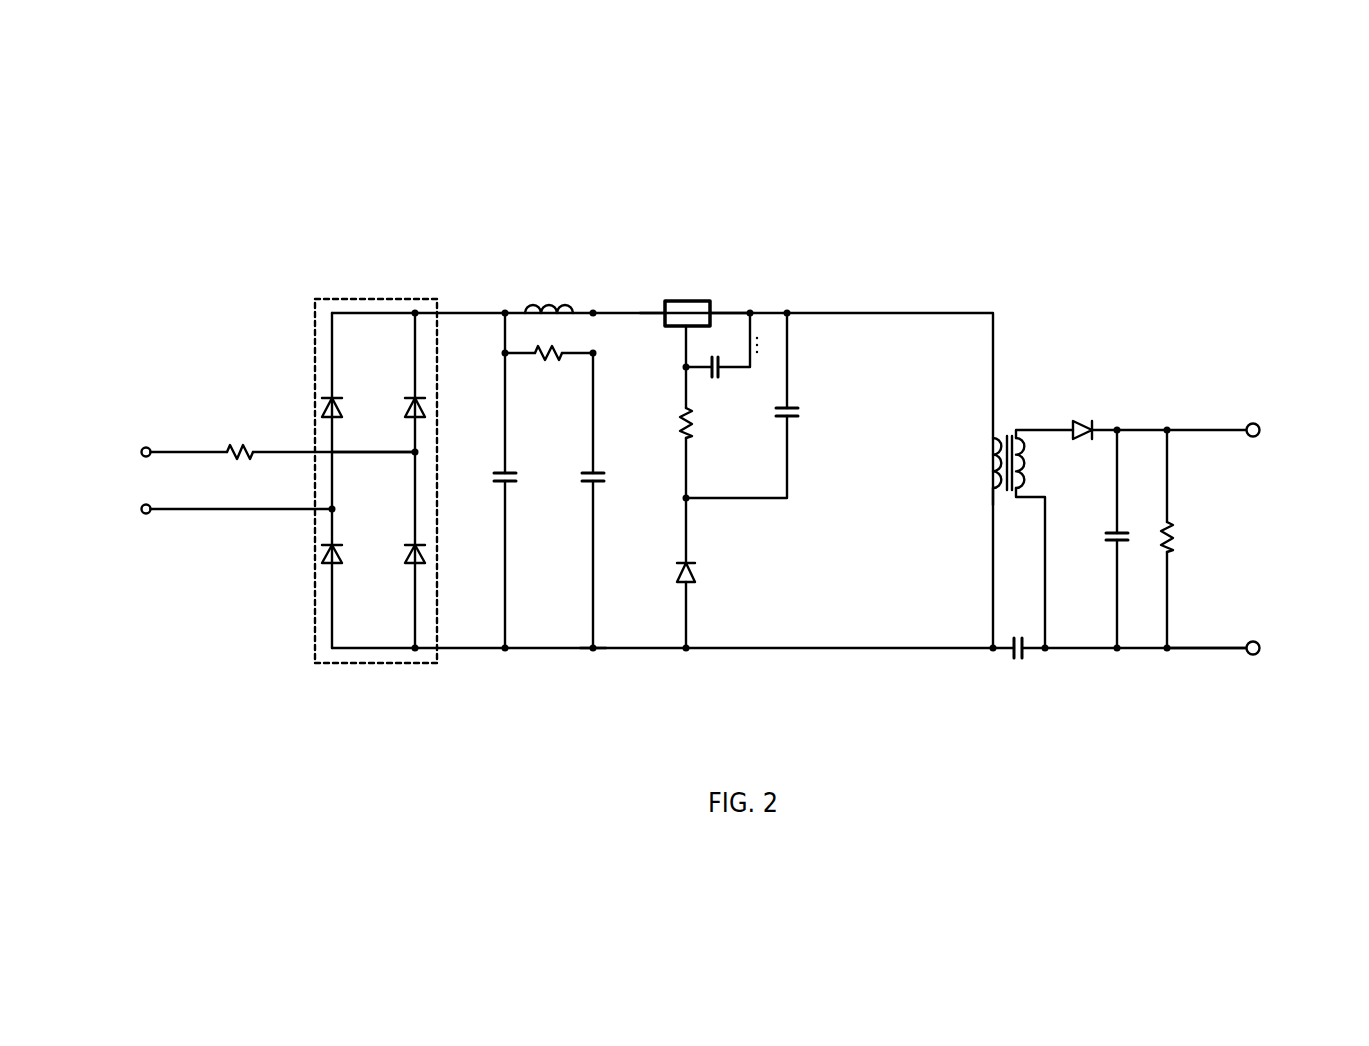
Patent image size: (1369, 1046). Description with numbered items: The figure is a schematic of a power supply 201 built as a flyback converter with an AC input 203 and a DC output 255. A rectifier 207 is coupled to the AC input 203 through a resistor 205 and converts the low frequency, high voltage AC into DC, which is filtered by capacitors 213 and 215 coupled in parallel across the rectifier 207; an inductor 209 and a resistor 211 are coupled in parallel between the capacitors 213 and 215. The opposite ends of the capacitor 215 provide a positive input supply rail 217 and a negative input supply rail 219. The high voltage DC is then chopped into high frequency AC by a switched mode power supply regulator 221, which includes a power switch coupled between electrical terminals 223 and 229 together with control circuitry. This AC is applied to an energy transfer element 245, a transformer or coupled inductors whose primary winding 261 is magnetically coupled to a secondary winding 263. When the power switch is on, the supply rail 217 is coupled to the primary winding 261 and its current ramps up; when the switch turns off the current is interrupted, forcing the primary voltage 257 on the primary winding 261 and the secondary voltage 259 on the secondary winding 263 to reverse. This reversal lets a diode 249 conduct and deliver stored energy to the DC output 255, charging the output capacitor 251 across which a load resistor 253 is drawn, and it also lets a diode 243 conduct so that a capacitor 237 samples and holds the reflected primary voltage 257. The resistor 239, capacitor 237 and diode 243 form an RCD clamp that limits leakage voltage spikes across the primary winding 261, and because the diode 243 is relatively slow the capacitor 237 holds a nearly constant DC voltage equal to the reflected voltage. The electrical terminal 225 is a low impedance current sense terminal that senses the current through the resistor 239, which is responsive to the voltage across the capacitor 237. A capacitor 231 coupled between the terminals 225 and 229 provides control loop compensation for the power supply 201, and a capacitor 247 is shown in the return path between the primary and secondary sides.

The power supply 201 is at (1160, 127).
The AC input 203 is at (110, 450).
The resistor 205 is at (235, 447).
The rectifier 207 is at (372, 297).
The inductor 209 is at (532, 307).
The resistor 211 is at (548, 360).
The capacitor 213 is at (506, 490).
The capacitor 215 is at (599, 490).
The positive input supply rail 217 is at (592, 310).
The negative input supply rail 219 is at (594, 652).
The power supply regulator 221 is at (686, 300).
The electrical terminal 223 is at (656, 305).
The electrical terminal 225 is at (681, 328).
The electrical terminal 229 is at (716, 312).
The capacitor 231 is at (716, 380).
The capacitor 237 is at (799, 413).
The resistor 239 is at (680, 421).
The diode 243 is at (696, 572).
The energy transfer element 245 is at (1014, 511).
The capacitor 247 is at (1018, 660).
The diode 249 is at (1077, 421).
The output capacitor 251 is at (1102, 533).
The load resistor 253 is at (1173, 536).
The DC output 255 is at (1320, 508).
The voltage V1 257 is at (977, 452).
The voltage V2 259 is at (1052, 470).
The primary winding 261 is at (992, 479).
The secondary winding 263 is at (1027, 499).